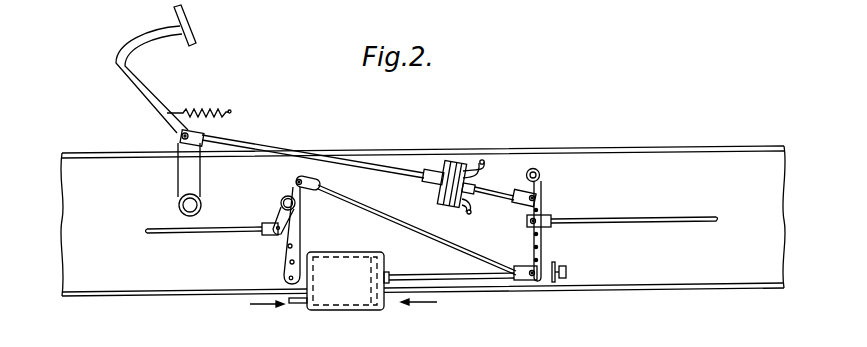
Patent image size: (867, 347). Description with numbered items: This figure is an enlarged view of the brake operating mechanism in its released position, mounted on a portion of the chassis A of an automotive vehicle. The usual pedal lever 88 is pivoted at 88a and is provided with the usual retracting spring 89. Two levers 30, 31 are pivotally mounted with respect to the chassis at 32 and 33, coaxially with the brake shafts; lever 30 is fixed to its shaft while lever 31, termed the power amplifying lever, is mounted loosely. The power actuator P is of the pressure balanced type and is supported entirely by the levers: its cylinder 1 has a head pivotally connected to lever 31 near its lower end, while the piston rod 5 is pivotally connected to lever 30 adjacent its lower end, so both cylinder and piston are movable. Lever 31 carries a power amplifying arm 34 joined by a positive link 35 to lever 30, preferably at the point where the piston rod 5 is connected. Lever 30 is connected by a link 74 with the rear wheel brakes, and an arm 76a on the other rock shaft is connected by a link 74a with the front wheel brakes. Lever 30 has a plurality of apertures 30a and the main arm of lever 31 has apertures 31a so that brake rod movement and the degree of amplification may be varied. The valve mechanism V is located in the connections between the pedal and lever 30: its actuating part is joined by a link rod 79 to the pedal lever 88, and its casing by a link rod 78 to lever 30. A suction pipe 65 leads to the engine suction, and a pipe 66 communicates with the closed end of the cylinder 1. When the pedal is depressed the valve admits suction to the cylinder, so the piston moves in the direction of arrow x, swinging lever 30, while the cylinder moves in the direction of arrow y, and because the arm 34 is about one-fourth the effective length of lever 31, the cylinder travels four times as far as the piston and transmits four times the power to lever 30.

The chassis portion A is at (648, 147).
The pedal lever 88 is at (155, 100).
The pedal lever pivot 88a is at (175, 205).
The retracting spring 89 is at (197, 109).
The link rod 79 is at (270, 148).
The valve mechanism V is at (463, 160).
The suction pipe 65 is at (482, 160).
The pipe 66 is at (469, 214).
The link rod 78 is at (497, 188).
The pivot 32 is at (540, 175).
The lever 30 is at (541, 250).
The apertures 30a is at (533, 259).
The link 74 is at (629, 223).
The positive link 35 is at (400, 219).
The power amplifying arm 34 is at (292, 183).
The power amplifying lever 31 is at (286, 252).
The arm 76a is at (292, 244).
The apertures 31a is at (294, 260).
The pivot 33 is at (281, 203).
The link 74a is at (188, 236).
The power actuator P is at (339, 281).
The cylinder 1 is at (340, 308).
The piston rod 5 is at (432, 275).
The arrow x is at (419, 310).
The arrow y is at (267, 312).